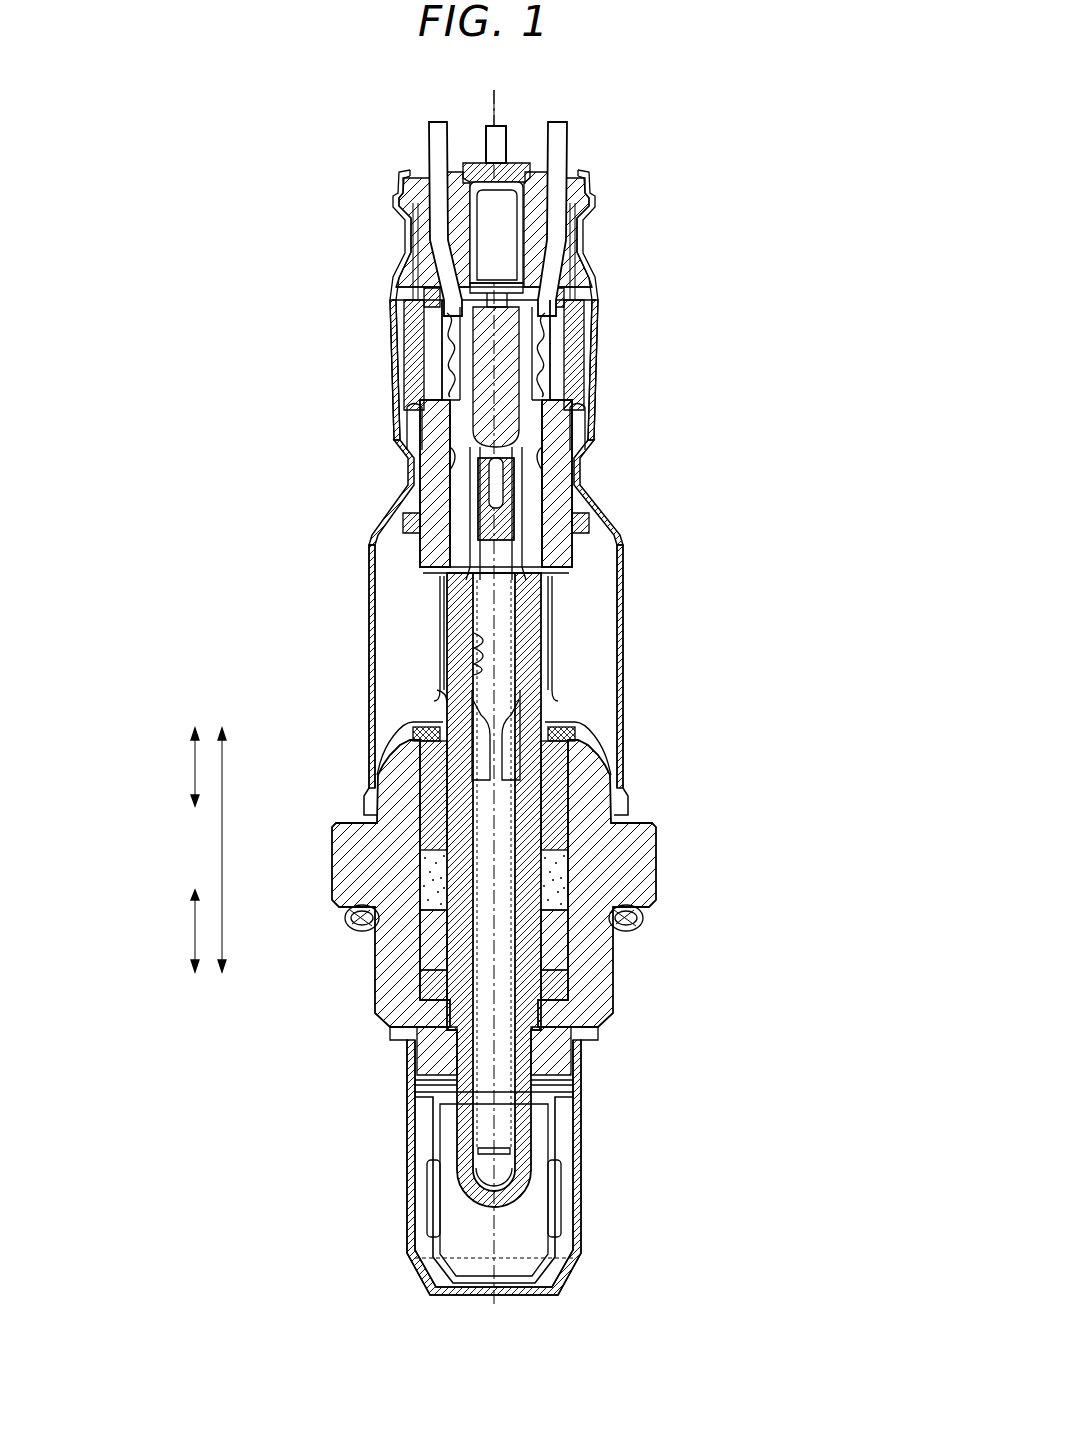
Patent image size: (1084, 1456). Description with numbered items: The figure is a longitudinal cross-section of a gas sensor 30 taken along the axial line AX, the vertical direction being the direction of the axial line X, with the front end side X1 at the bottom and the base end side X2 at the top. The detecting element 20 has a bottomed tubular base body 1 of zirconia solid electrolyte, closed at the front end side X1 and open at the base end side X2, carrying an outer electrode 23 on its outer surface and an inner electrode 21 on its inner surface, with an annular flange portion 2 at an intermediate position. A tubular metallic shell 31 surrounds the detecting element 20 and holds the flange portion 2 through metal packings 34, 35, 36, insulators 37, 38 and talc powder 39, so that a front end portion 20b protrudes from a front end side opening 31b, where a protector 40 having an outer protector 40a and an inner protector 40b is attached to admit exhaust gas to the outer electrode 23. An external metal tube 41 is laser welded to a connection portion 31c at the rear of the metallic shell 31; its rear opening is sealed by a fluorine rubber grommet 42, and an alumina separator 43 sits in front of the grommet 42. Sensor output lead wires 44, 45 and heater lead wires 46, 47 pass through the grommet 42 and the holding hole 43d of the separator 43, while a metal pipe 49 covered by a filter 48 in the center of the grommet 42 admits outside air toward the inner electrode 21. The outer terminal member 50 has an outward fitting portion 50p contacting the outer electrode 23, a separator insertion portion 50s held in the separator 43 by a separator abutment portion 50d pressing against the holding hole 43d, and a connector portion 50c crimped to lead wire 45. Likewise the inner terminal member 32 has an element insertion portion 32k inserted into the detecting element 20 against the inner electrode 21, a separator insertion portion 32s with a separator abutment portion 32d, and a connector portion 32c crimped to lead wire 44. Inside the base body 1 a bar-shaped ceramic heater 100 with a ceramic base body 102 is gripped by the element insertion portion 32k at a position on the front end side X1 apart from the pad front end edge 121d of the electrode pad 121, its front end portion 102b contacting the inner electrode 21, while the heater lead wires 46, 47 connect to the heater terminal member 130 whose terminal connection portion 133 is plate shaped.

The base body 1 is at (627, 700).
The flange portion 2 is at (565, 942).
The detecting element 20 is at (510, 657).
The front end portion 20b is at (490, 1210).
The inner electrode 21 is at (522, 860).
The outer electrode 23 is at (440, 702).
The gas sensor 30 is at (320, 245).
The metallic shell 31 is at (657, 852).
The front end side opening 31b is at (420, 1083).
The connection portion 31c is at (627, 752).
The inner terminal member 32 is at (512, 590).
The connector portion 32c is at (545, 348).
The separator abutment portion 32d is at (590, 462).
The element insertion portion 32k is at (512, 655).
The separator insertion portion 32s is at (597, 427).
The metal packing 34 is at (560, 1030).
The metal packing 35 is at (560, 966).
The metal packing 36 is at (582, 725).
The insulator 37 is at (560, 992).
The insulator 38 is at (577, 803).
The talc powder 39 is at (600, 905).
The protector 40 is at (696, 1113).
The outer protector 40a is at (580, 1127).
The inner protector 40b is at (552, 1170).
The external metal tube 41 is at (372, 683).
The grommet 42 is at (577, 270).
The separator 43 is at (565, 488).
The holding hole 43d is at (440, 548).
The sensor output lead wire 44 is at (565, 138).
The sensor output lead wire 45 is at (433, 137).
The heater lead wire 46 is at (493, 124).
The heater lead wire 47 is at (496, 144).
The filter 48 is at (587, 215).
The metal pipe 49 is at (516, 245).
The outer terminal member 50 is at (395, 500).
The connector portion 50c is at (450, 340).
The separator abutment portion 50d is at (397, 447).
The outward fitting portion 50p is at (455, 645).
The separator insertion portion 50s is at (395, 427).
The ceramic heater 100 is at (472, 805).
The ceramic base body 102 is at (348, 907).
The front end portion 102b is at (560, 1185).
The electrode pad 121 is at (470, 530).
The pad front end edge 121d is at (466, 580).
The heater terminal member 130 is at (496, 499).
The terminal connection portion 133 is at (530, 505).
The axial line AX is at (500, 97).
The axial line direction X is at (222, 855).
The front end side X1 is at (195, 925).
The base end side X2 is at (195, 785).